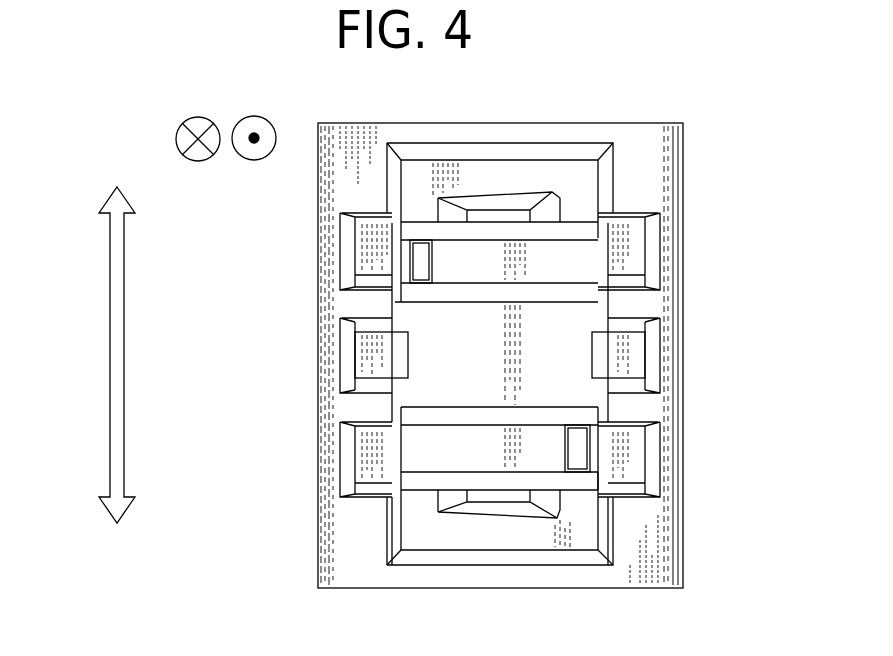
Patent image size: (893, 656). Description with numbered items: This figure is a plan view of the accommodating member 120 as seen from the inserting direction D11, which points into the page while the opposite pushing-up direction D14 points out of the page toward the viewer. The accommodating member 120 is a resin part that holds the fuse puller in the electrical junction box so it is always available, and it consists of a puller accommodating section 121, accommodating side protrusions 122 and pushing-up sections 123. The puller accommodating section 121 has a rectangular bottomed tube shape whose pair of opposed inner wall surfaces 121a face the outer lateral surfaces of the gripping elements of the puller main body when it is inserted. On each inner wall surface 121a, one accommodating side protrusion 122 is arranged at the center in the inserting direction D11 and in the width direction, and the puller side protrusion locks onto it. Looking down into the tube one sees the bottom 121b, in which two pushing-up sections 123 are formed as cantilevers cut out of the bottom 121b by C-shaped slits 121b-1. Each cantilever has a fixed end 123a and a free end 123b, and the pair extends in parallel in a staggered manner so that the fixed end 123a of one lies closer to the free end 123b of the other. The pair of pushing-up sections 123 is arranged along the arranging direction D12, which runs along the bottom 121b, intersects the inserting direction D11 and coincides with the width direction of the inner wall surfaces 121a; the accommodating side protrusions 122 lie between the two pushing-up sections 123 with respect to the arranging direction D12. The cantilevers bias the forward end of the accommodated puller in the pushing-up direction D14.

The accommodating member 120 is at (587, 120).
The puller accommodating section 121 is at (683, 157).
The inner wall surfaces 121a is at (360, 258).
The bottom 121b is at (495, 377).
The C-shaped slits 121b-1 is at (424, 412).
The accommodating side protrusion 122 is at (372, 352).
The pushing-up sections 123 is at (503, 238).
The fixed end 123a is at (598, 263).
The free end 123b is at (423, 257).
The inserting direction D11 is at (176, 139).
The arranging direction D12 is at (110, 352).
The pushing-up direction D14 is at (268, 121).